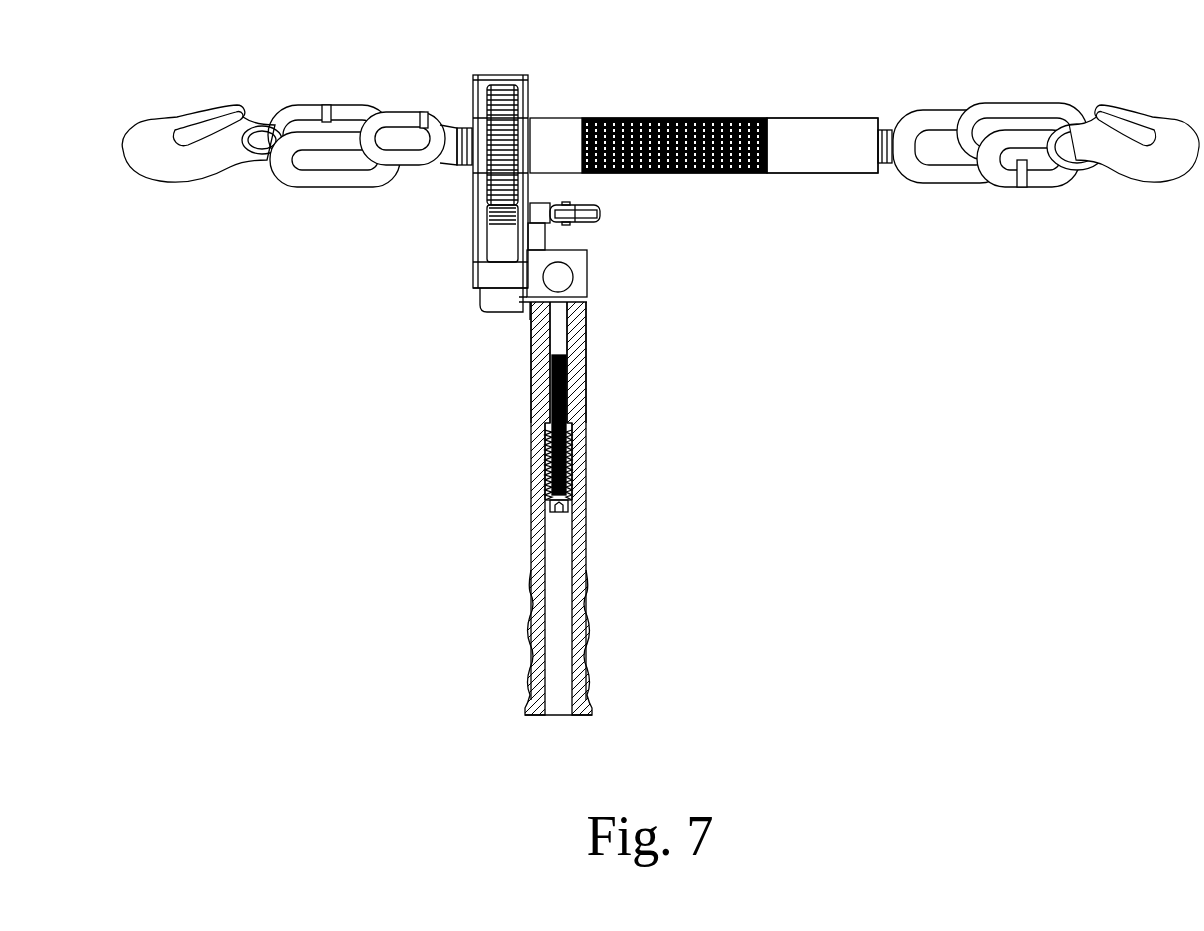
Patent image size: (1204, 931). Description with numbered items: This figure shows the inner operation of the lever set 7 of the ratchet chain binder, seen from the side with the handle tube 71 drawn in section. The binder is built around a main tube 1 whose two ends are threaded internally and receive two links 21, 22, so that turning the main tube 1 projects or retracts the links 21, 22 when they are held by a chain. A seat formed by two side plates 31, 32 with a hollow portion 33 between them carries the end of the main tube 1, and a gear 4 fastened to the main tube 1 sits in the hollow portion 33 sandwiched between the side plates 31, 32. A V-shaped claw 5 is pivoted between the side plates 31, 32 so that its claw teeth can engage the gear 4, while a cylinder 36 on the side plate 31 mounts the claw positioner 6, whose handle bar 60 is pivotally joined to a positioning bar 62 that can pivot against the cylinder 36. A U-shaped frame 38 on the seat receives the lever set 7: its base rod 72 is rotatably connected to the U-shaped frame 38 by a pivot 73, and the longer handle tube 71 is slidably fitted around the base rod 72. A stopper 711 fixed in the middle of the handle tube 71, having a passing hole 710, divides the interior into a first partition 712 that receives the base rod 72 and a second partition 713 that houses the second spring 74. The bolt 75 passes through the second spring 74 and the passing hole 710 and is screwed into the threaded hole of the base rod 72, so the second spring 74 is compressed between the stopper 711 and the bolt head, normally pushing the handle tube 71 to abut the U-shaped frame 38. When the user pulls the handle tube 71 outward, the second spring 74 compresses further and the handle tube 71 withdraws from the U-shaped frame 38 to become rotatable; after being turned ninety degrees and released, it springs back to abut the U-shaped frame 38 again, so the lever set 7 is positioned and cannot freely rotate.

The main tube 1 is at (784, 108).
The gear 4 is at (503, 100).
The claw 5 is at (498, 227).
The claw positioner 6 is at (614, 212).
The lever set 7 is at (518, 461).
The link 21 is at (907, 137).
The link 22 is at (415, 118).
The side plate 31 is at (527, 238).
The side plate 32 is at (482, 190).
The hollow portion 33 is at (498, 257).
The cylinder 36 is at (538, 203).
The U-shaped frame 38 is at (497, 272).
The handle bar 60 is at (617, 118).
The positioning bar 62 is at (588, 205).
The handle tube 71 is at (584, 530).
The base rod 72 is at (562, 322).
The pivot 73 is at (562, 276).
The second spring 74 is at (583, 466).
The bolt 75 is at (545, 508).
The passing hole 710 is at (548, 422).
The stopper 711 is at (585, 408).
The first partition 712 is at (570, 402).
The second partition 713 is at (555, 613).